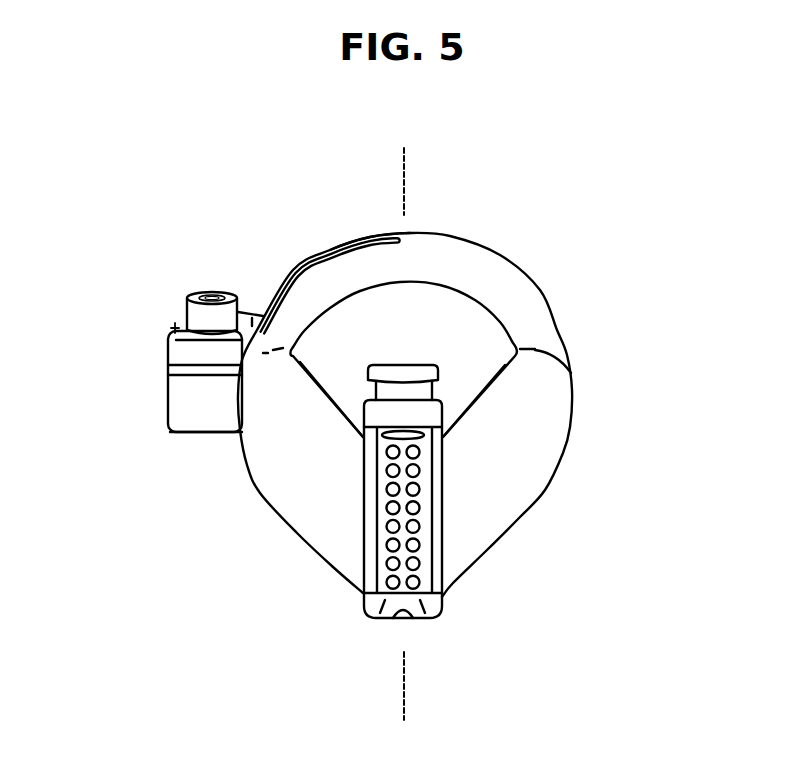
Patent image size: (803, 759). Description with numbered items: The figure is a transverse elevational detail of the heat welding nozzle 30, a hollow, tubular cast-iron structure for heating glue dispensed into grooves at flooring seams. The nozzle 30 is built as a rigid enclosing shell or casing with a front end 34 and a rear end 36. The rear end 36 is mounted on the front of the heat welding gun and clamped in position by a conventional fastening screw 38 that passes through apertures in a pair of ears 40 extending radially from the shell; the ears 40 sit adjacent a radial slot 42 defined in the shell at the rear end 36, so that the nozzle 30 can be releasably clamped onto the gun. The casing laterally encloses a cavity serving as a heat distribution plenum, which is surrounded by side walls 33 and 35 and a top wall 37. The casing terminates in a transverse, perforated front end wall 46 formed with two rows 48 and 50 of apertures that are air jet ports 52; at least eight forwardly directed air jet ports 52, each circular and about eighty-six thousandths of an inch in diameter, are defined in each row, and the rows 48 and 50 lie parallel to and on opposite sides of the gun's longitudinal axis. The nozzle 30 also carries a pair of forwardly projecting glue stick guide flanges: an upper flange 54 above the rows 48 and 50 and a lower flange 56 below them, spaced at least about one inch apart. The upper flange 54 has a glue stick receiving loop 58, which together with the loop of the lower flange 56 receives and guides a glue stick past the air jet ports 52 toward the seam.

The heat welding nozzle 30 is at (540, 237).
The side wall 33 is at (231, 420).
The front end 34 is at (353, 407).
The side wall 35 is at (572, 371).
The rear end 36 is at (371, 236).
The top wall 37 is at (458, 252).
The fastening screw 38 is at (190, 310).
The ears 40 is at (185, 405).
The radial slot 42 is at (332, 257).
The front end wall 46 is at (383, 482).
The row of apertures 48 is at (427, 520).
The row of apertures 50 is at (381, 536).
The air jet ports 52 is at (412, 489).
The upper flange 54 is at (435, 408).
The lower flange 56 is at (437, 603).
The glue stick receiving loop 58 is at (421, 437).